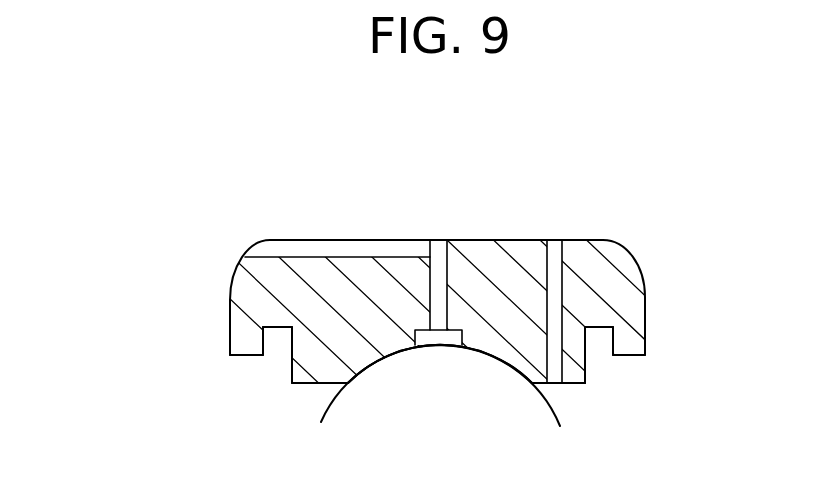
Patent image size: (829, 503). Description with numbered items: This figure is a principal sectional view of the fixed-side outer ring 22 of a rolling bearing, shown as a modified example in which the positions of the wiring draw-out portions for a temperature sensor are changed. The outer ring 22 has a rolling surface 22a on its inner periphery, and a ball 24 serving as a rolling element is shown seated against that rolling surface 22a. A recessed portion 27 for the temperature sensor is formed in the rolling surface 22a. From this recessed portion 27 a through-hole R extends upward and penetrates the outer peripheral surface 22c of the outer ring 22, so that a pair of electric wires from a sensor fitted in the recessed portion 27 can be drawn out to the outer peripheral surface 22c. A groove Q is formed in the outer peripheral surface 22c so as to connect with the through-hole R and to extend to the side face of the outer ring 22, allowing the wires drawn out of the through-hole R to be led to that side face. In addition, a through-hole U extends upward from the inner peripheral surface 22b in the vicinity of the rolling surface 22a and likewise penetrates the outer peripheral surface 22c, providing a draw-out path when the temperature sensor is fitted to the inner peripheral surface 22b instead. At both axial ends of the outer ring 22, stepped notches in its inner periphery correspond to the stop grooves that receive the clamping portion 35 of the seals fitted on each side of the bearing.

The outer ring 22 is at (252, 292).
The rolling surface 22a is at (393, 358).
The inner peripheral surface 22b is at (534, 378).
The outer peripheral surface 22c is at (518, 240).
The ball 24 is at (485, 373).
The recessed portion 27 is at (443, 347).
The clamping portion 35 is at (280, 338).
The groove Q is at (363, 248).
The through-hole R is at (437, 272).
The through-hole U is at (557, 248).